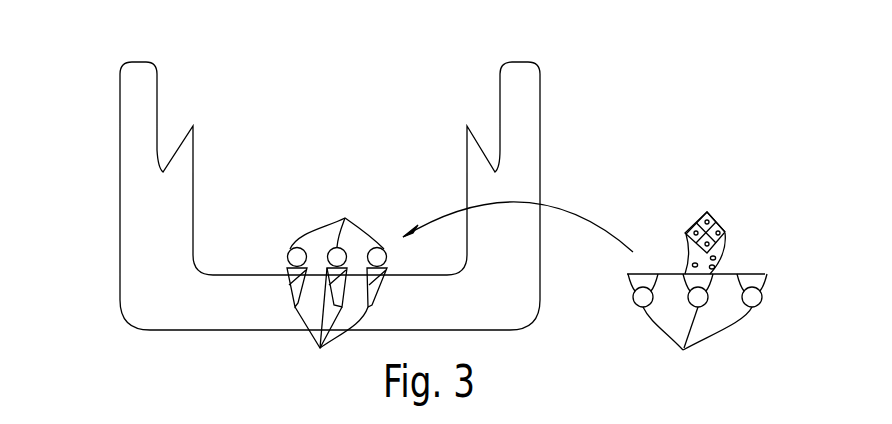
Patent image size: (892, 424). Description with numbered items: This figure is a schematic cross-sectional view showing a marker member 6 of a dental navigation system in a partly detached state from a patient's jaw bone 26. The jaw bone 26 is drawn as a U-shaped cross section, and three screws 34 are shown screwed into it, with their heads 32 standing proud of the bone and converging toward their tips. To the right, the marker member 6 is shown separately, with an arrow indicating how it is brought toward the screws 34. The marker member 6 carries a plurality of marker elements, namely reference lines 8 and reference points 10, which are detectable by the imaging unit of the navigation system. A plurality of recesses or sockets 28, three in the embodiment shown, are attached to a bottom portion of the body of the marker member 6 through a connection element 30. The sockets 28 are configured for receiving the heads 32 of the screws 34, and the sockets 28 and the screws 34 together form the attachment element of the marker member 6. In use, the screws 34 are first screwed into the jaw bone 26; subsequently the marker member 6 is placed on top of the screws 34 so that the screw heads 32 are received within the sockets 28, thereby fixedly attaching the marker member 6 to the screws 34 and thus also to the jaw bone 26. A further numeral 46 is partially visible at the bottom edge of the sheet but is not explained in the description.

The marker member 6 is at (724, 228).
The reference lines 8 is at (700, 220).
The reference points 10 is at (723, 236).
The jaw bone 26 is at (120, 133).
The sockets 28 is at (697, 329).
The connection element 30 is at (720, 266).
The heads 32 is at (345, 218).
The screws 34 is at (320, 348).
The support 46 is at (297, 418).